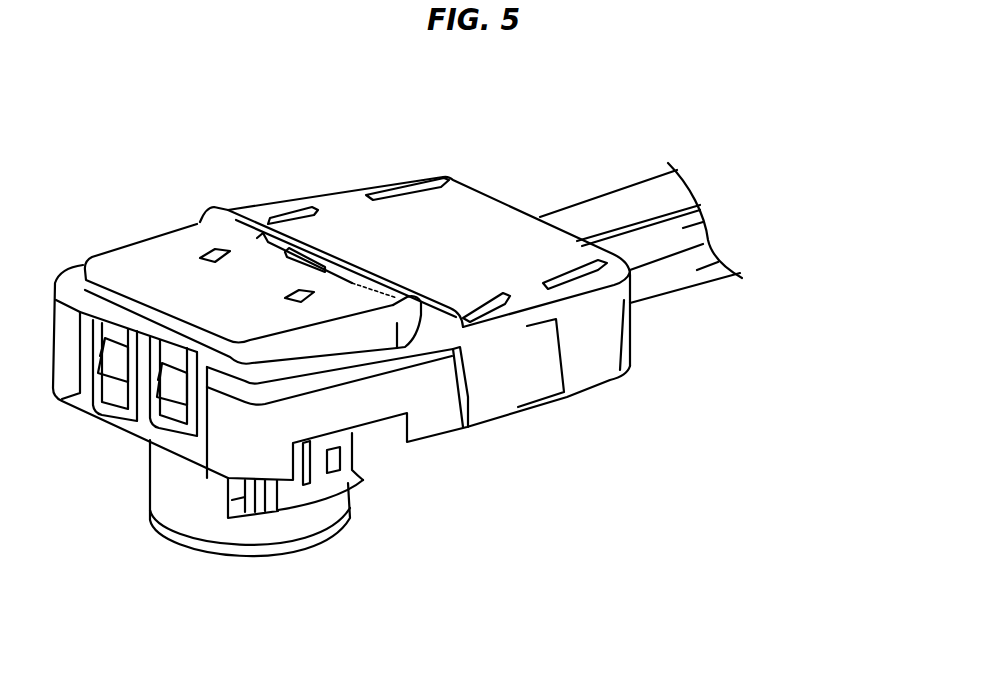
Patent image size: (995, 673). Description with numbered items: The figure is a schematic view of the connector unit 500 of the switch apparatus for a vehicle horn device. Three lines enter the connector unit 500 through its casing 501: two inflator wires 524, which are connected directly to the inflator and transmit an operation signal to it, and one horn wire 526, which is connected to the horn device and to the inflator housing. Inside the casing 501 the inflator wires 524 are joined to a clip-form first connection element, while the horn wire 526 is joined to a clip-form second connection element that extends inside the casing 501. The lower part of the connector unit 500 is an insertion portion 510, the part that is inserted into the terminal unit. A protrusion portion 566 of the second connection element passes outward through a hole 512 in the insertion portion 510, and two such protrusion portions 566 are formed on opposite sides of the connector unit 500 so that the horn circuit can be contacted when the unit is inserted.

The connector unit 500 is at (558, 414).
The casing 501 is at (355, 222).
The insertion portion 510 is at (180, 508).
The hole 512 is at (347, 442).
The inflator wires 524 is at (703, 222).
The horn wire 526 is at (628, 205).
The protrusion portion 566 is at (318, 462).